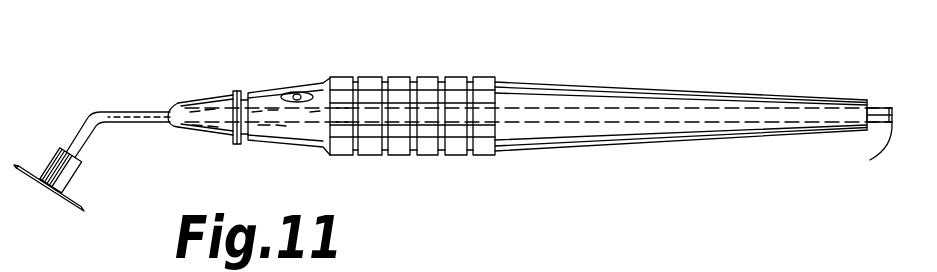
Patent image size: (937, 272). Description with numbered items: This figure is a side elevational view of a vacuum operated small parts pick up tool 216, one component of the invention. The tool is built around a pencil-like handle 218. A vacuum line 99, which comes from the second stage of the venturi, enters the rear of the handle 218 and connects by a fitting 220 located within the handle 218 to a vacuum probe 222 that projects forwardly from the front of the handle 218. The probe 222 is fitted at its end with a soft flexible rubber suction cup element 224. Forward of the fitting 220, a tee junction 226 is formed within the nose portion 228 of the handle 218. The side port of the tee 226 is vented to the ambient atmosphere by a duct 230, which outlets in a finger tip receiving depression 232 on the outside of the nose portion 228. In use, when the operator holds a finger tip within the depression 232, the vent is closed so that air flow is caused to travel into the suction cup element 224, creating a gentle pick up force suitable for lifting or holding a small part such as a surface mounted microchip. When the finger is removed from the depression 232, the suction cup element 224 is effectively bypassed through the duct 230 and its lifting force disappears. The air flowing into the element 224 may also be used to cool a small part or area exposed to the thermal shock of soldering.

The small parts pick up tool 216 is at (453, 131).
The pencil-like handle 218 is at (582, 87).
The fitting 220 is at (350, 73).
The vacuum probe 222 is at (70, 137).
The suction cup element 224 is at (72, 203).
The tee junction 226 is at (302, 118).
The nose portion 228 is at (260, 92).
The duct 230 is at (283, 105).
The finger tip receiving depression 232 is at (300, 92).
The vacuum line 99 is at (880, 107).